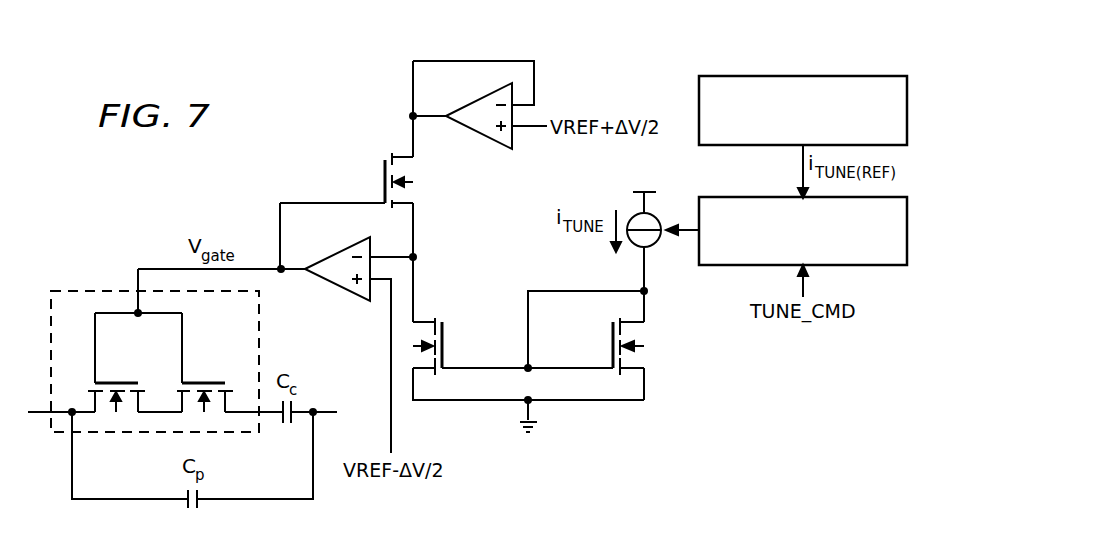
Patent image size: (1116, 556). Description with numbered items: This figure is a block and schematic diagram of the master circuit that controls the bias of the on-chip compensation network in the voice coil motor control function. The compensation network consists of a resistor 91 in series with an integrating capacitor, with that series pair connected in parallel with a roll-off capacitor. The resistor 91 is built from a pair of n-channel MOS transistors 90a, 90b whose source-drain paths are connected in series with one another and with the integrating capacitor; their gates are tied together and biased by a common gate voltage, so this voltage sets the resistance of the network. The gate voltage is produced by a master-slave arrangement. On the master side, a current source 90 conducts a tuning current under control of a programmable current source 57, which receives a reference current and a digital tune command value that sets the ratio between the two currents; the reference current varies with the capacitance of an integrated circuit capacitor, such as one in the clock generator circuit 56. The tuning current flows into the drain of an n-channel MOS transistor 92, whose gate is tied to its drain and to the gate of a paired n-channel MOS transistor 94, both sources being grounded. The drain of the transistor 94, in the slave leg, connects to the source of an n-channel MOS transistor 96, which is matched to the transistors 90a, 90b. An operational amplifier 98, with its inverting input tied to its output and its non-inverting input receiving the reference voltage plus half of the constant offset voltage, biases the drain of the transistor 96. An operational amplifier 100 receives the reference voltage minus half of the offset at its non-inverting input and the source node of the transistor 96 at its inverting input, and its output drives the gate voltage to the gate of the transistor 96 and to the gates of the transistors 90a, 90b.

The clock generator circuit 56 is at (813, 75).
The programmable current source 57 is at (880, 265).
The current source 90 is at (657, 245).
The n-channel MOS transistor 90a is at (128, 383).
The n-channel MOS transistor 90b is at (217, 383).
The resistor 91 is at (88, 282).
The n-channel MOS transistor 92 is at (613, 337).
The n-channel MOS transistor 94 is at (443, 335).
The n-channel MOS transistor 96 is at (385, 172).
The operational amplifier 98 is at (480, 135).
The operational amplifier 100 is at (333, 283).